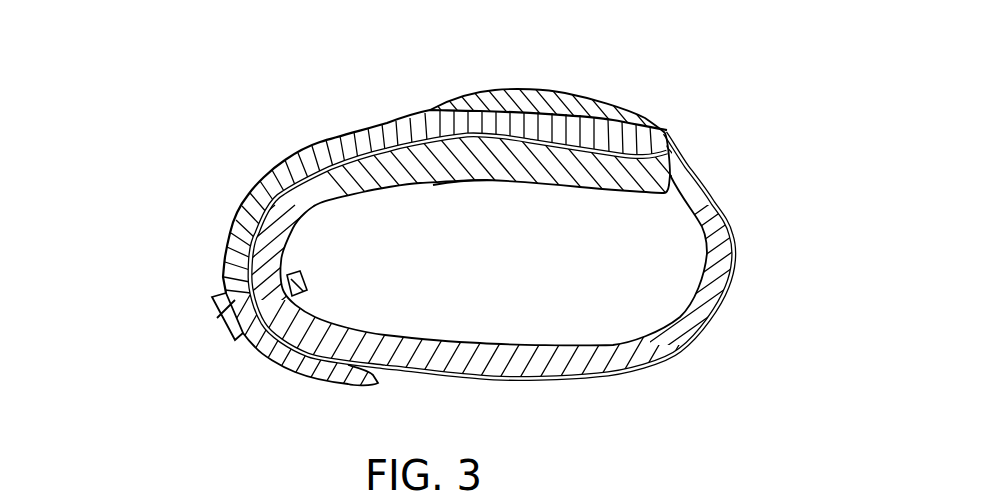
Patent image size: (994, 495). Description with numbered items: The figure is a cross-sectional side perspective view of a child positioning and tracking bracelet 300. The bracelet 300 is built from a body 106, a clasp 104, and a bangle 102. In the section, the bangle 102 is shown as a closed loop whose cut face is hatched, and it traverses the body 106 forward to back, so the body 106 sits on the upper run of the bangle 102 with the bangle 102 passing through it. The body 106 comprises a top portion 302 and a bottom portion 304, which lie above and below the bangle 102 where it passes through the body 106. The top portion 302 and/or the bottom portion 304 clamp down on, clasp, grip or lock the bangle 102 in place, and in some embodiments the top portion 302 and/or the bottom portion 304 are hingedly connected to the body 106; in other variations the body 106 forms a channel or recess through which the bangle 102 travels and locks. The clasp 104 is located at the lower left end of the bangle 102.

The child positioning and tracking bracelet 300 is at (113, 75).
The bangle 102 is at (577, 357).
The clasp 104 is at (217, 303).
The body 106 is at (617, 97).
The top portion 302 is at (573, 93).
The bottom portion 304 is at (590, 167).